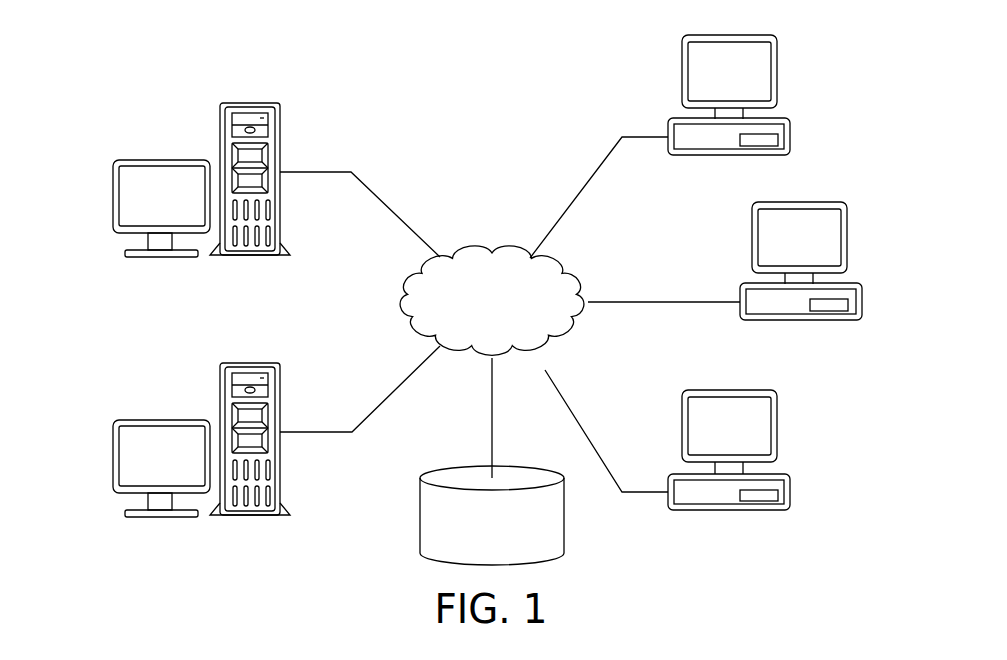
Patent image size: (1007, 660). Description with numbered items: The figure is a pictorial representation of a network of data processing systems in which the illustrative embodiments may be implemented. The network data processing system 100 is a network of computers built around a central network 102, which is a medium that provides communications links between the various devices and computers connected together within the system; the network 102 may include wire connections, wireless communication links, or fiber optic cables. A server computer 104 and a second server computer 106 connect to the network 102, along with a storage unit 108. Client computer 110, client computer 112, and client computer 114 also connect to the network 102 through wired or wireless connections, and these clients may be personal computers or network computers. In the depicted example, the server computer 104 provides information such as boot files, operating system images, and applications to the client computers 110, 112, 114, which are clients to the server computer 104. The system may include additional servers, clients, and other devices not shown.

The network data processing system 100 is at (358, 80).
The network 102 is at (462, 248).
The server computer 104 is at (113, 195).
The server computer 106 is at (113, 455).
The storage unit 108 is at (419, 515).
The client computer 110 is at (794, 127).
The client computer 112 is at (862, 310).
The client computer 114 is at (790, 500).